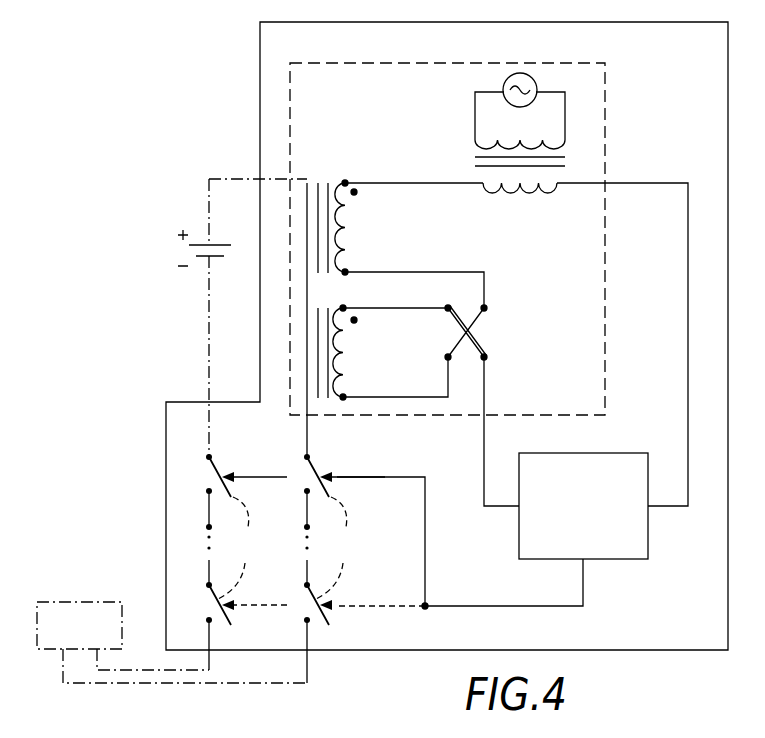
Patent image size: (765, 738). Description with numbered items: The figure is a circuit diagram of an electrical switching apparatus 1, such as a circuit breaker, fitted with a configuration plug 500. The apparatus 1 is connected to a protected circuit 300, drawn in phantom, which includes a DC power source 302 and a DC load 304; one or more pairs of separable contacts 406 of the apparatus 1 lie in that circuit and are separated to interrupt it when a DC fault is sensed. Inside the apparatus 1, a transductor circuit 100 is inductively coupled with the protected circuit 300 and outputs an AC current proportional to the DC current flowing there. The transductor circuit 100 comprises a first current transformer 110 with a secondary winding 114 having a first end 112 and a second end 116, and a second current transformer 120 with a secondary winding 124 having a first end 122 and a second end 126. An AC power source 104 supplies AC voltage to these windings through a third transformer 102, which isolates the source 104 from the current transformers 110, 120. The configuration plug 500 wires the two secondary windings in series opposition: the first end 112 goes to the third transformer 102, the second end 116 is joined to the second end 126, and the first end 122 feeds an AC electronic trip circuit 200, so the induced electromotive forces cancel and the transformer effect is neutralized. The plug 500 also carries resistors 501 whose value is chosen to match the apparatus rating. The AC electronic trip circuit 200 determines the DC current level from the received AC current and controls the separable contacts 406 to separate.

The electrical switching apparatus 1 is at (259, 25).
The transductor circuit 100 is at (605, 96).
The third transformer 102 is at (533, 133).
The AC power source 104 is at (508, 103).
The first current transformer 110 is at (366, 196).
The first end 112 is at (346, 181).
The secondary winding 114 is at (347, 222).
The second end 116 is at (346, 270).
The second current transformer 120 is at (359, 371).
The first end 122 is at (345, 307).
The secondary winding 124 is at (345, 343).
The second end 126 is at (345, 396).
The AC electronic trip circuit 200 is at (625, 560).
The protected circuit 300 is at (220, 292).
The DC power source 302 is at (189, 251).
The DC load 304 is at (71, 600).
The separable contacts 406 is at (295, 433).
The configuration plug 500 is at (490, 339).
The resistors 501 is at (463, 325).